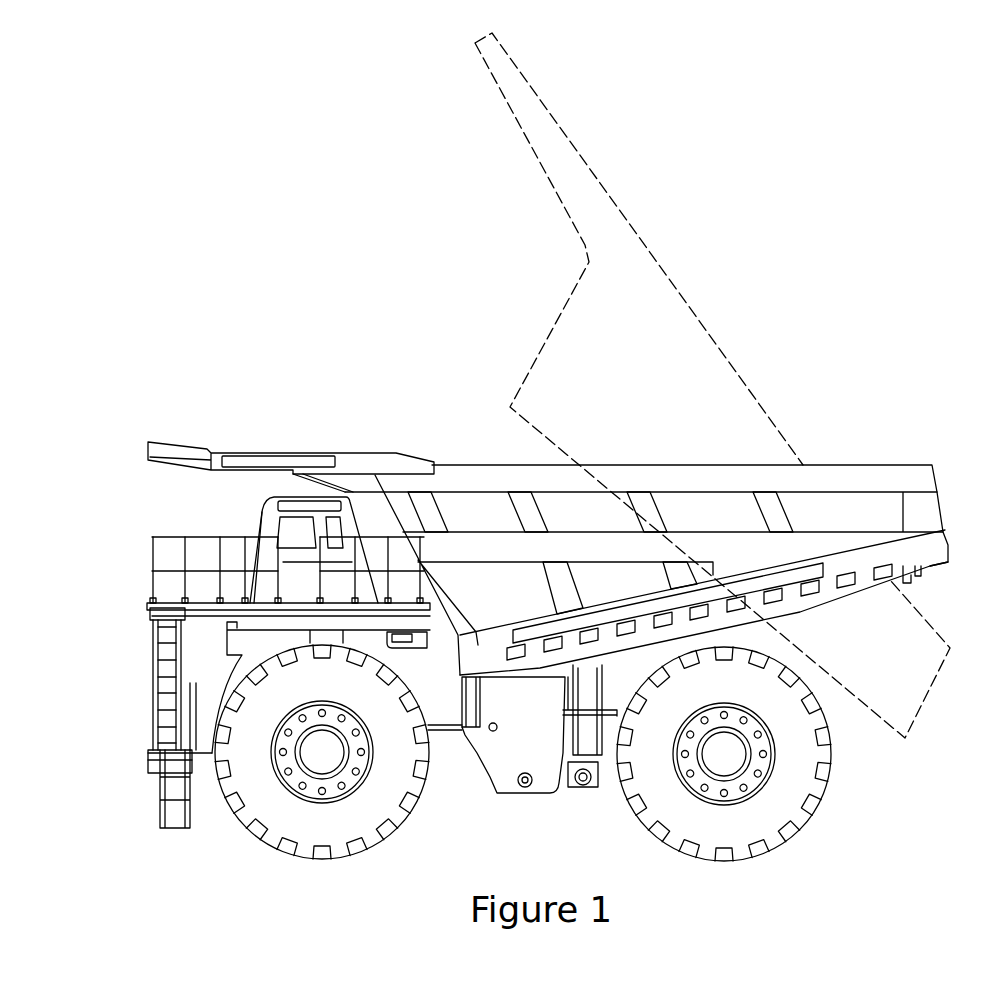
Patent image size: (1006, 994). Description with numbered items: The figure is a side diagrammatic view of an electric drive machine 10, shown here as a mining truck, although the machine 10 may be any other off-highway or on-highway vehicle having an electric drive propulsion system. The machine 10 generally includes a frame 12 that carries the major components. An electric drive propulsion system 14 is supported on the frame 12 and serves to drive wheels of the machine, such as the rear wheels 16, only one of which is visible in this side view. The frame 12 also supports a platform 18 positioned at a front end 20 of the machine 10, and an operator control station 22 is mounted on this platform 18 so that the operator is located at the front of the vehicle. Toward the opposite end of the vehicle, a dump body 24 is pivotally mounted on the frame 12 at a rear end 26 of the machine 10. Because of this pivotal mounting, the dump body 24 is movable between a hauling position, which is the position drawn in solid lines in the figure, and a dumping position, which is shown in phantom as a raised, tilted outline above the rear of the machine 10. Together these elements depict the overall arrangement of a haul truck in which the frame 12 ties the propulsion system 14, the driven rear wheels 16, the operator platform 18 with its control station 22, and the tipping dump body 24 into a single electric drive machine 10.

The machine 10 is at (779, 213).
The frame 12 is at (463, 728).
The electric drive propulsion system 14 is at (447, 692).
The rear wheels 16 is at (803, 790).
The platform 18 is at (297, 628).
The front end 20 is at (114, 441).
The operator control station 22 is at (272, 500).
The dump body 24 is at (865, 465).
The rear end 26 is at (916, 358).